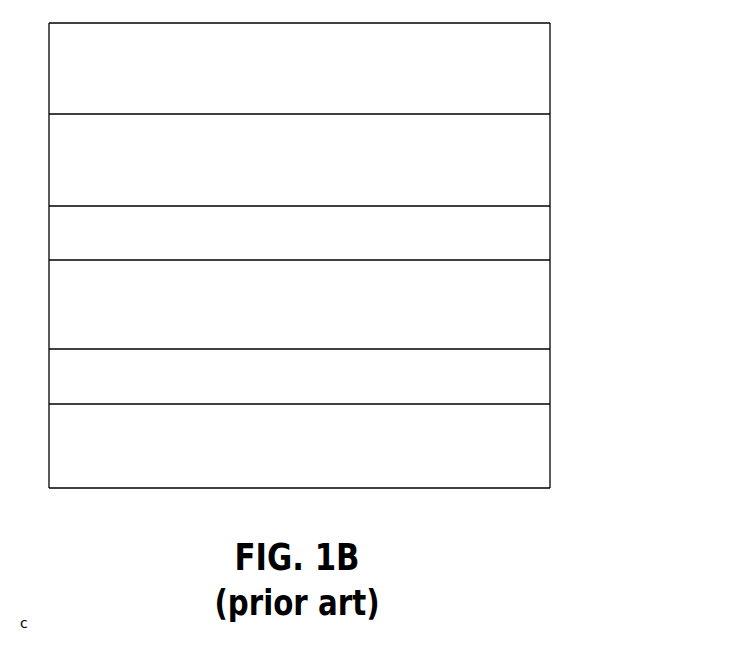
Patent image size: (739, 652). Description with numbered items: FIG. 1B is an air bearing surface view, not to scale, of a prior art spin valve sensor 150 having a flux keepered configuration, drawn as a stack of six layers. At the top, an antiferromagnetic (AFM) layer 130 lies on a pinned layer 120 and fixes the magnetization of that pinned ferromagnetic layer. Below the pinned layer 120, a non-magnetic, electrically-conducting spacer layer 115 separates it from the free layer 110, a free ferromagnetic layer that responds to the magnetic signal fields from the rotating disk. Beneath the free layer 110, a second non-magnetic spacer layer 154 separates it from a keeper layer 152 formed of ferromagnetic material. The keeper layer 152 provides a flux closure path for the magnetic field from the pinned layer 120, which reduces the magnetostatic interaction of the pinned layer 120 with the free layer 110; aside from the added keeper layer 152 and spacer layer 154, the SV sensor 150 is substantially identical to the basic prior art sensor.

The SV sensor 150 is at (522, 534).
The antiferromagnetic (AFM) layer 130 is at (523, 102).
The pinned layer 120 is at (523, 177).
The spacer layer 115 is at (523, 242).
The free layer 110 is at (526, 320).
The spacer layer 154 is at (527, 383).
The keeper layer 152 is at (527, 469).